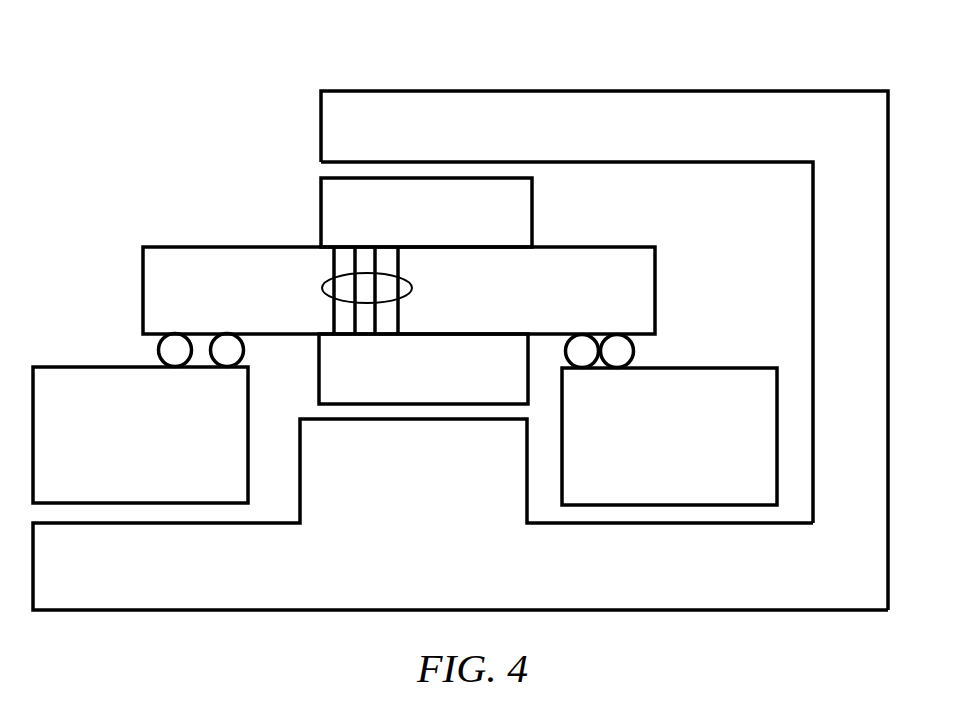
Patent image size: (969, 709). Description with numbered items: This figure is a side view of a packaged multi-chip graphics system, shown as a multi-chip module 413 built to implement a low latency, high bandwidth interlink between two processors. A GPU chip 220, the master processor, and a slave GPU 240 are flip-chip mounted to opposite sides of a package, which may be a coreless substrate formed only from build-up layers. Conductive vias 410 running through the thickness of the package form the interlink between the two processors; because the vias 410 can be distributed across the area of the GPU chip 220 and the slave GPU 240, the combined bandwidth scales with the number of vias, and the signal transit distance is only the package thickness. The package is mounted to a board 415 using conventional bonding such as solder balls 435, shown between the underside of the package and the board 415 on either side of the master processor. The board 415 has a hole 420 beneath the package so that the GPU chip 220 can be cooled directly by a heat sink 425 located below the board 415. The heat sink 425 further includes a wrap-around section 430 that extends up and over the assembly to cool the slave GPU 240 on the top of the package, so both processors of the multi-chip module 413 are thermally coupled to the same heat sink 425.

The multi-chip module 413 is at (460, 312).
The wrap-around section 430 is at (637, 141).
The heat sink 425 is at (435, 566).
The slave GPU 240 is at (369, 205).
The conductive vias 410 is at (309, 269).
The GPU chip 220 is at (423, 396).
The solder balls 435 is at (157, 352).
The board 415 is at (90, 404).
The hole 420 is at (300, 398).